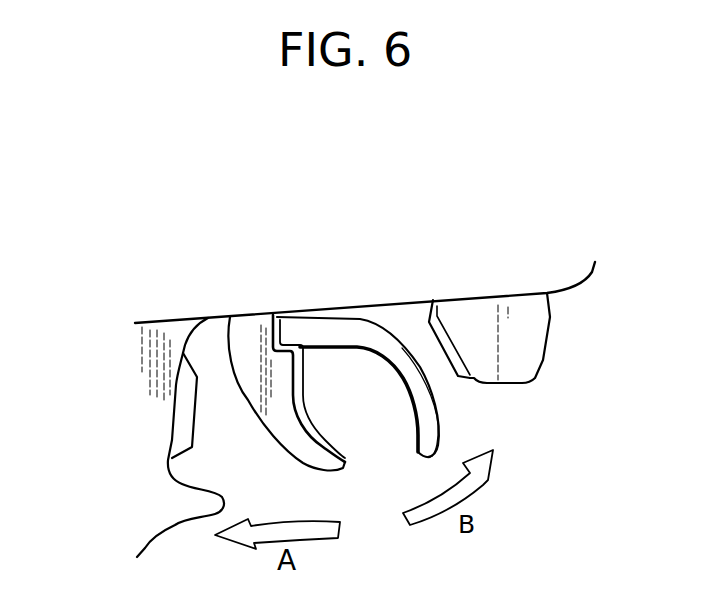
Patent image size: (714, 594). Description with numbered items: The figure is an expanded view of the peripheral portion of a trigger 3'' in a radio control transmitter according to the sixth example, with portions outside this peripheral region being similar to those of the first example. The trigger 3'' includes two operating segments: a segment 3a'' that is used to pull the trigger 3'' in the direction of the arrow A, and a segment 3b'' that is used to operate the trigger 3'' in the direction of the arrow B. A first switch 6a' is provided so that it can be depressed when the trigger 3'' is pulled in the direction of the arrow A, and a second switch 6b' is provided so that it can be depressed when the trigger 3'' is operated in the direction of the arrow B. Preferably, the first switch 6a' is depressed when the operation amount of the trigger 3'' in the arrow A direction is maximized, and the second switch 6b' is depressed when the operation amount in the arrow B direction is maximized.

The trigger 3'' is at (365, 318).
The segment 3a'' is at (286, 415).
The segment 3b'' is at (358, 339).
The first switch 6a' is at (119, 437).
The second switch 6b' is at (547, 338).